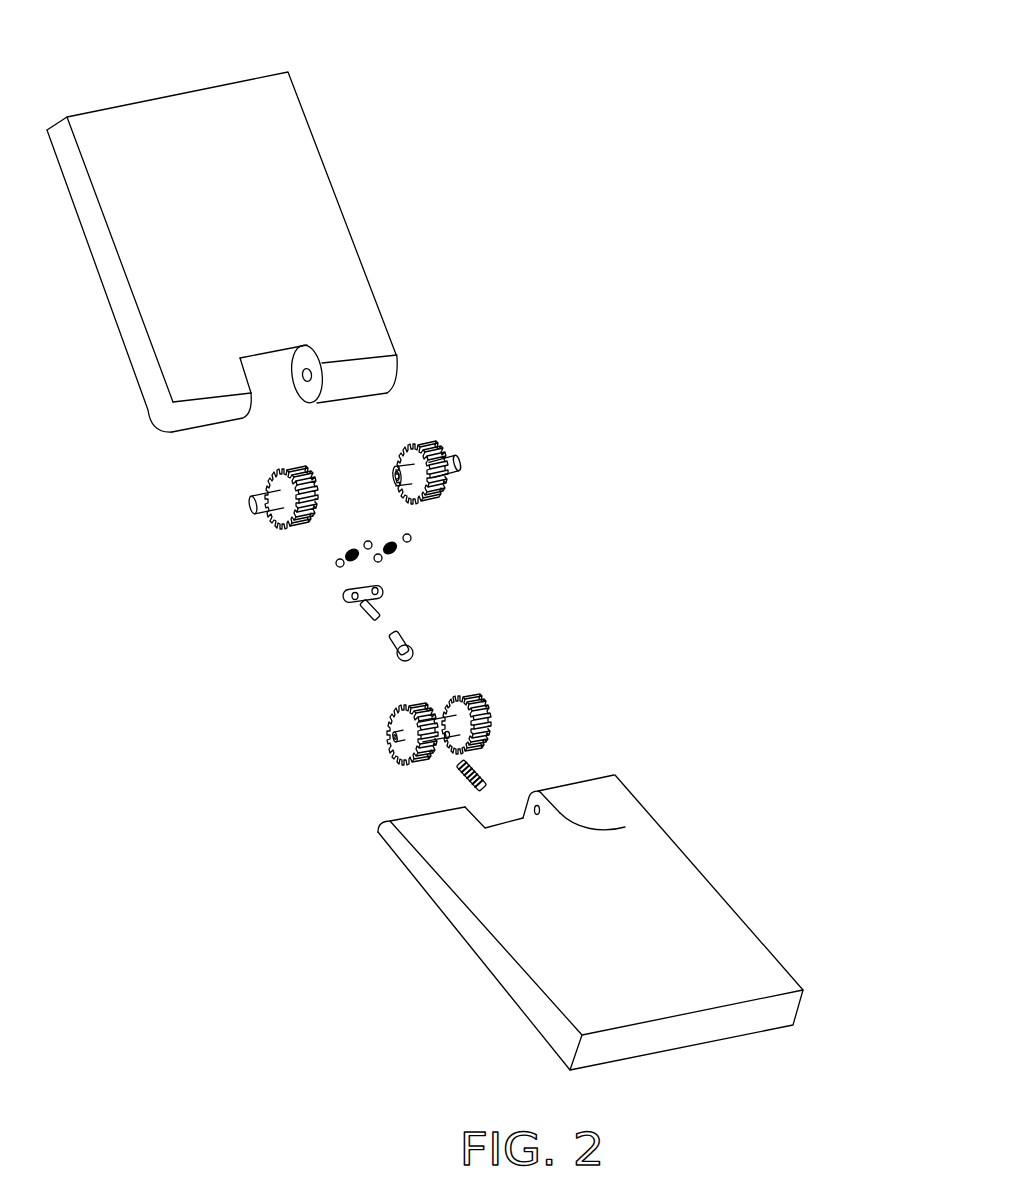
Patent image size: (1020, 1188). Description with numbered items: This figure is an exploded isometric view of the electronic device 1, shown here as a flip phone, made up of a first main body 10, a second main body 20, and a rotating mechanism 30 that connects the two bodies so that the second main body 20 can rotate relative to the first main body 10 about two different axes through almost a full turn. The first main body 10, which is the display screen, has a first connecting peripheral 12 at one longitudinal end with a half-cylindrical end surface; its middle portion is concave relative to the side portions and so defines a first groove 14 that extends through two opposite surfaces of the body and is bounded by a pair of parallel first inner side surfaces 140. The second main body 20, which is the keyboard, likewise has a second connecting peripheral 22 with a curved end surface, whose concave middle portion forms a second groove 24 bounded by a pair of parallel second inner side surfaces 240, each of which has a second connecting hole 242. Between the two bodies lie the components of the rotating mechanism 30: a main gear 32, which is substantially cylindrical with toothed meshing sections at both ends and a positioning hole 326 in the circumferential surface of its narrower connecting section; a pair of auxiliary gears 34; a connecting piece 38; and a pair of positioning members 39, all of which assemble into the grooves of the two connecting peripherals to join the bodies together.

The electronic device 1 is at (426, 46).
The first main body 10 is at (590, 901).
The first connecting peripheral 12 is at (630, 781).
The first groove 14 is at (505, 808).
The first inner side surfaces 140 is at (625, 827).
The second main body 20 is at (260, 252).
The second connecting peripheral 22 is at (381, 345).
The second groove 24 is at (267, 378).
The second inner side surfaces 240 is at (381, 345).
The second connecting hole 242 is at (322, 373).
The rotating mechanism 30 is at (418, 622).
The main gear 32 is at (455, 734).
The positioning hole 326 is at (448, 738).
The auxiliary gears 34 is at (263, 532).
The connecting piece 38 is at (390, 608).
The positioning members 39 is at (418, 533).